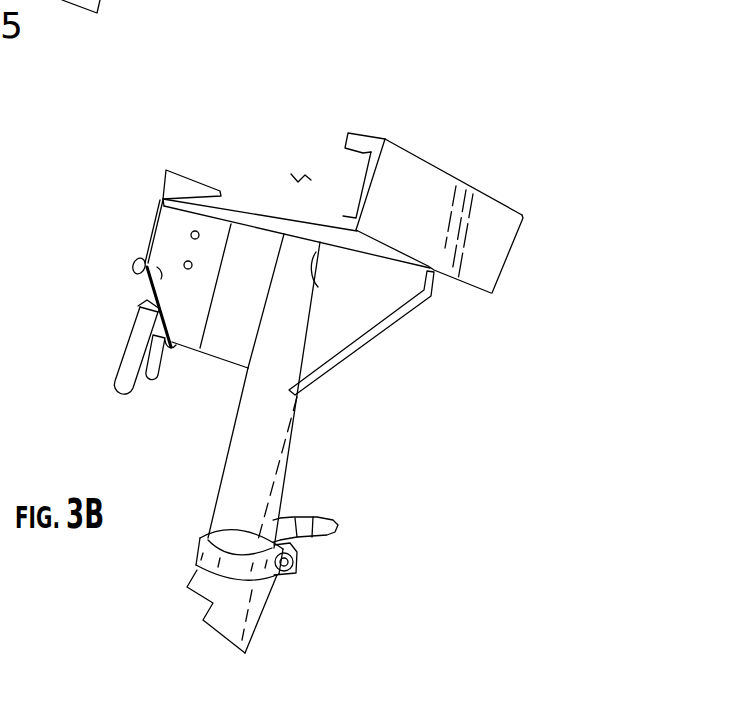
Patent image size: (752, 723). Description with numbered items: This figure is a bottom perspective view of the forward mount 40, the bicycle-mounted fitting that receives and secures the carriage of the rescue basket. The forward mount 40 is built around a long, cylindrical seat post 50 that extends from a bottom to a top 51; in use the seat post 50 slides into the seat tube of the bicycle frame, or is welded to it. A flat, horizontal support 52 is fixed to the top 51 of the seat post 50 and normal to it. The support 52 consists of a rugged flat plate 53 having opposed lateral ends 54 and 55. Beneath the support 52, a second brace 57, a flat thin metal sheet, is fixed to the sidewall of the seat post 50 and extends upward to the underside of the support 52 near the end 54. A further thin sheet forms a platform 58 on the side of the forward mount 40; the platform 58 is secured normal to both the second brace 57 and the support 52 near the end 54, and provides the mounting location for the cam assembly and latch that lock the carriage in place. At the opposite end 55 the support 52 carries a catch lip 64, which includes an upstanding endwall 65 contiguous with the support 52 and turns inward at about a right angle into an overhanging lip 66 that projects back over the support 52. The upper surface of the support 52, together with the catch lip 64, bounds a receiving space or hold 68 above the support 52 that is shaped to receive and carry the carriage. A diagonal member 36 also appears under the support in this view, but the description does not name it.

The forward mount 40 is at (523, 118).
The seat post 50 is at (280, 473).
The top 51 is at (318, 287).
The horizontal support 52 is at (270, 213).
The flat plate 53 is at (160, 201).
The lateral end 54 is at (193, 182).
The lateral end 55 is at (343, 217).
The second brace 57 is at (234, 338).
The platform 58 is at (150, 300).
The catch lip 64 is at (528, 229).
The upstanding endwall 65 is at (496, 248).
The overhanging lip 66 is at (367, 131).
The hold 68 is at (298, 182).
The diagonal strut 36 is at (350, 328).